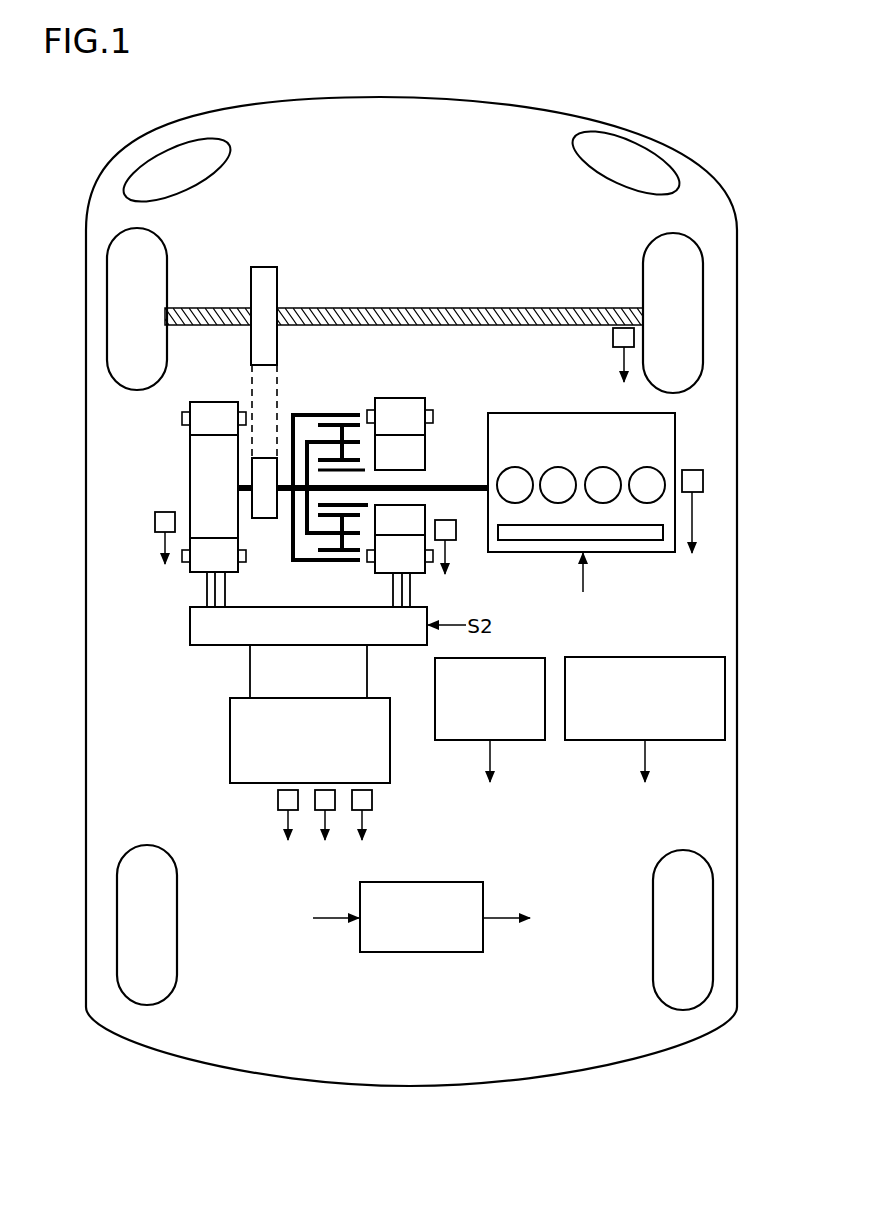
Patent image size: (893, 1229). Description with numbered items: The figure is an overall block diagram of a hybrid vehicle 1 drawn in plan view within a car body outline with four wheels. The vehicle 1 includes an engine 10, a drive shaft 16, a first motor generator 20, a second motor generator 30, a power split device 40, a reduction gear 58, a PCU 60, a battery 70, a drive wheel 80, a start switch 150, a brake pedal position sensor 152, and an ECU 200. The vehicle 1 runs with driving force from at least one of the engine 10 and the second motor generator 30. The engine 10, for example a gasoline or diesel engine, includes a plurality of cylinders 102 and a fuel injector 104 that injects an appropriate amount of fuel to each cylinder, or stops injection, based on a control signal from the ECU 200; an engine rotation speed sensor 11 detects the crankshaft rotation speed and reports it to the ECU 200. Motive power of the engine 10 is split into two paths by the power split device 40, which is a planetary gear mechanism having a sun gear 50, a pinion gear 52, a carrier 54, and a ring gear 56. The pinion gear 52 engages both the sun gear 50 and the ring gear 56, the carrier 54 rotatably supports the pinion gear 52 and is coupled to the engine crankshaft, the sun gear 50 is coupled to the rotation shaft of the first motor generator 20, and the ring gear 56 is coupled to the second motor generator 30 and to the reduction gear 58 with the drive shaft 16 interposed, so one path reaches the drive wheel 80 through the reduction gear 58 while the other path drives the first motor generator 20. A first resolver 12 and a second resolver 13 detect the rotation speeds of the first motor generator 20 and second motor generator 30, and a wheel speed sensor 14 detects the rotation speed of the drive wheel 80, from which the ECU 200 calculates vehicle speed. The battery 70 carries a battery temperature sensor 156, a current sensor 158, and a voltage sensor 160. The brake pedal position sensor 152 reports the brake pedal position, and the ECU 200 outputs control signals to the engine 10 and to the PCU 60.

The vehicle 1 is at (375, 67).
The engine 10 is at (517, 413).
The engine rotation speed sensor 11 is at (693, 469).
The first resolver 12 is at (446, 520).
The second resolver 13 is at (165, 512).
The wheel speed sensor 14 is at (613, 338).
The drive shaft 16 is at (283, 493).
The first motor generator 20 is at (400, 398).
The second motor generator 30 is at (216, 402).
The power split device 40 is at (347, 398).
The sun gear 50 is at (363, 482).
The pinion gear 52 is at (353, 553).
The carrier 54 is at (311, 538).
The ring gear 56 is at (317, 414).
The reduction gear 58 is at (264, 267).
The PCU 60 is at (190, 625).
The battery 70 is at (230, 738).
The drive wheel 80 is at (654, 236).
The cylinders 102 is at (603, 467).
The fuel injector 104 is at (627, 541).
The start switch 150 is at (492, 657).
The brake pedal position sensor 152 is at (674, 657).
The battery temperature sensor 156 is at (278, 797).
The current sensor 158 is at (330, 790).
The voltage sensor 160 is at (372, 797).
The ECU 200 is at (447, 882).